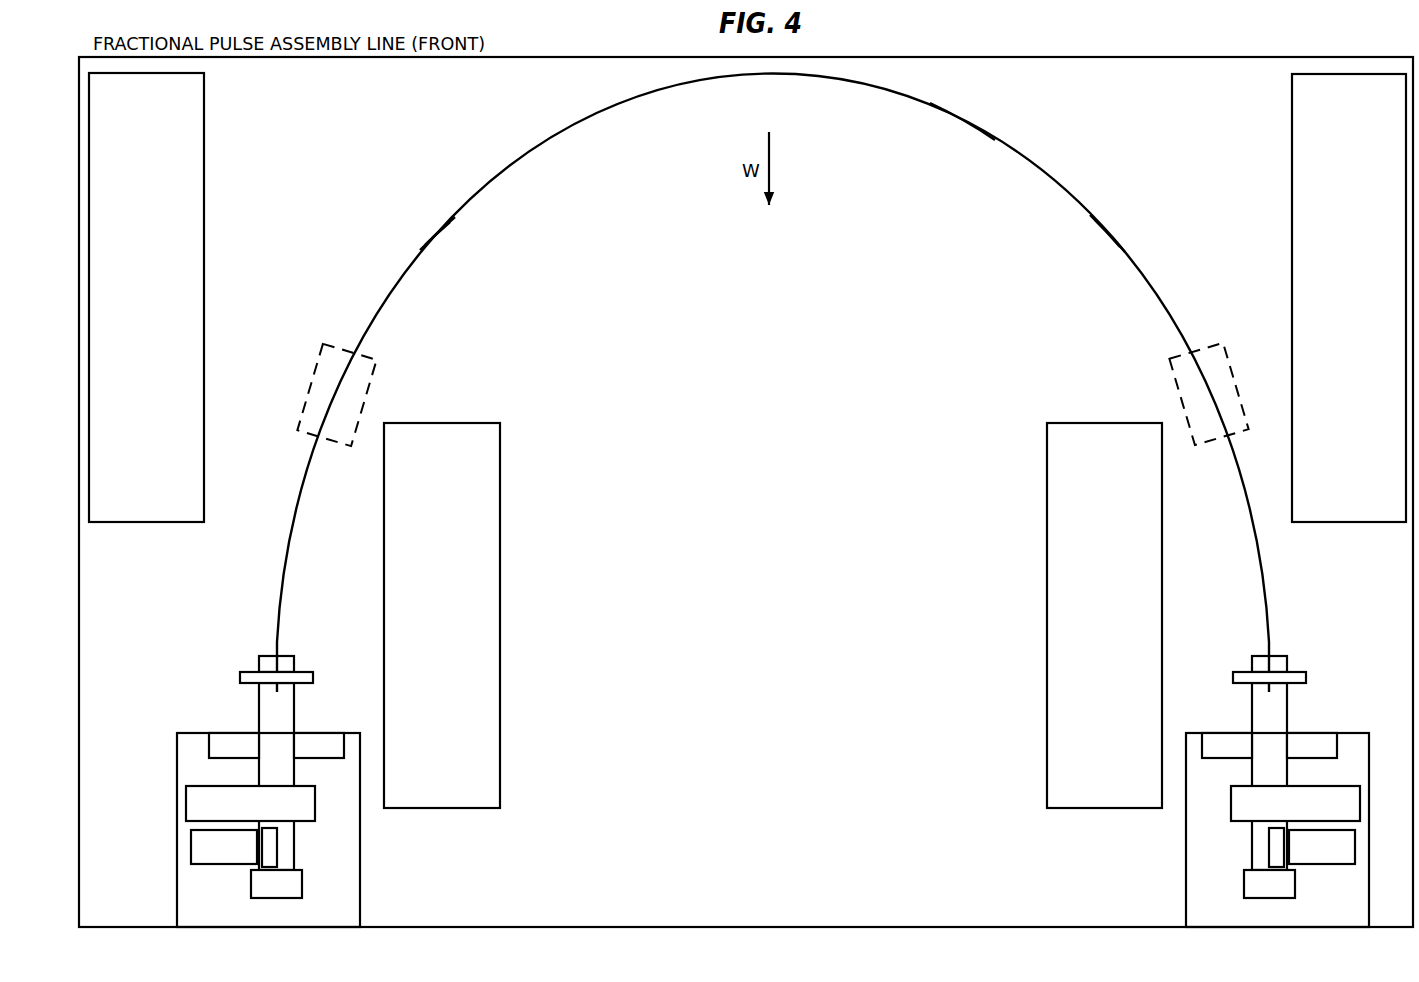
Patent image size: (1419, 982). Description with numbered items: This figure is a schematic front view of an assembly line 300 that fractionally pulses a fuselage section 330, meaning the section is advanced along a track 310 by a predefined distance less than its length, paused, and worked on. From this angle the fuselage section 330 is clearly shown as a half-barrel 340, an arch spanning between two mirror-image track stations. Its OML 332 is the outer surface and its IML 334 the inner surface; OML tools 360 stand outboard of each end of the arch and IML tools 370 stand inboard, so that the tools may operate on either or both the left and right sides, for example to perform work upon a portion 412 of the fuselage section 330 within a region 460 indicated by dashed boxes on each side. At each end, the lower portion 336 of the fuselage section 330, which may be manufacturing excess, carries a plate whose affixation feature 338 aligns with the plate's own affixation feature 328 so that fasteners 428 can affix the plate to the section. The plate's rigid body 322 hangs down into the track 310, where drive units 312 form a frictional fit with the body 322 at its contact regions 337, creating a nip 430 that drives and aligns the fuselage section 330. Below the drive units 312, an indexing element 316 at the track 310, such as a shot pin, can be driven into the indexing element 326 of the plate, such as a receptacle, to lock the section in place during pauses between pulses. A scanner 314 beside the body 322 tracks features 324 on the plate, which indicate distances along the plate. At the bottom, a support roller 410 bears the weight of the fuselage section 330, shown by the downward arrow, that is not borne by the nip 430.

The assembly line 300 is at (860, 917).
The track 310 is at (868, 85).
The drive units 312 is at (251, 757).
The scanner 314 is at (241, 858).
The indexing element 316 is at (267, 815).
The body 322 is at (284, 706).
The features 324 is at (278, 846).
The indexing element 326 is at (280, 782).
The affixation feature 328 is at (288, 660).
The fuselage section 330 is at (970, 108).
The OML 332 is at (424, 230).
The IML 334 is at (450, 250).
The lower portion 336 is at (225, 583).
The contact regions 337 is at (163, 736).
The affixation feature 338 is at (266, 660).
The half-barrel 340 is at (1104, 141).
The OML tool 360 is at (1366, 487).
The IML tool 370 is at (1121, 789).
The support roller 410 is at (293, 896).
The portion 412 is at (350, 367).
The fasteners 428 is at (245, 684).
The nip 430 is at (284, 732).
The region 460 is at (370, 384).